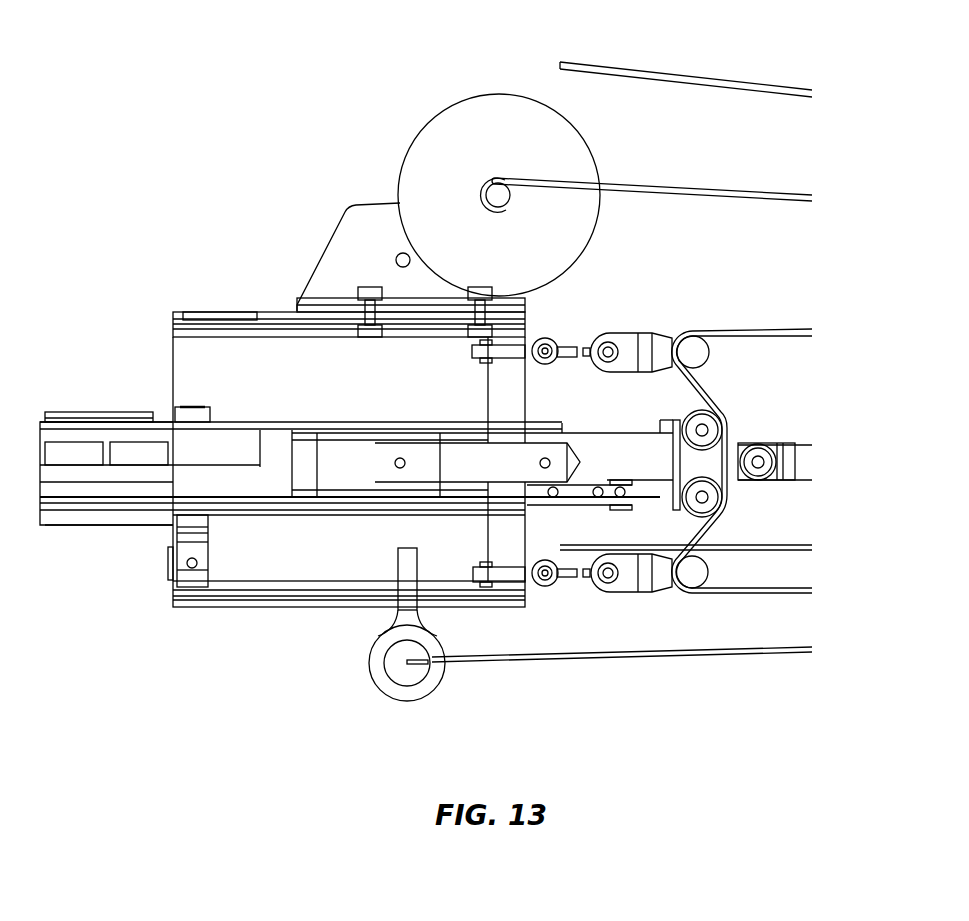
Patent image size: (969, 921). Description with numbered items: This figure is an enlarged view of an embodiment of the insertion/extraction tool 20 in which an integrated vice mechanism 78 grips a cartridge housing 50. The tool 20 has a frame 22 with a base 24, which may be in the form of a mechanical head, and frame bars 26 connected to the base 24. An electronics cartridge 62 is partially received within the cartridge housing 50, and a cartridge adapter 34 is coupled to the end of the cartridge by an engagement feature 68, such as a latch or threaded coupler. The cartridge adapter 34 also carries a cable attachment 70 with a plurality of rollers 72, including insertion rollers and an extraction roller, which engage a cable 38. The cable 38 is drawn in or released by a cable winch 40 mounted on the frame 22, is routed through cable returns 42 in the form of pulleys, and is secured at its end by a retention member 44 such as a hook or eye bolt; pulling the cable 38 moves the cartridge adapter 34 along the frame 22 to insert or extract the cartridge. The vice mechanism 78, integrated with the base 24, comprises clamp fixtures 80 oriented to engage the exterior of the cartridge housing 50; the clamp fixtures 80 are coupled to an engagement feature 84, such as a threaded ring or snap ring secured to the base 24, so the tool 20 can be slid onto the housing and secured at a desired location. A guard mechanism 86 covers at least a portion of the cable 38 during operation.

The tool 20 is at (745, 135).
The frame 22 is at (826, 572).
The base 24 is at (173, 592).
The frame bars 26 is at (783, 545).
The cartridge adapter 34 is at (652, 500).
The cable 38 is at (745, 327).
The cable winch 40 is at (435, 86).
The cable returns 42 is at (668, 328).
The retention member 44 is at (443, 677).
The cartridge housing 50 is at (163, 420).
The electronics cartridge 62 is at (251, 503).
The engagement feature 68 is at (362, 507).
The cable attachment 70 is at (756, 408).
The rollers 72 is at (696, 414).
The vice mechanism 78 is at (78, 538).
The clamp fixtures 80 is at (75, 411).
The engagement feature 84 is at (191, 396).
The guard mechanism 86 is at (648, 70).